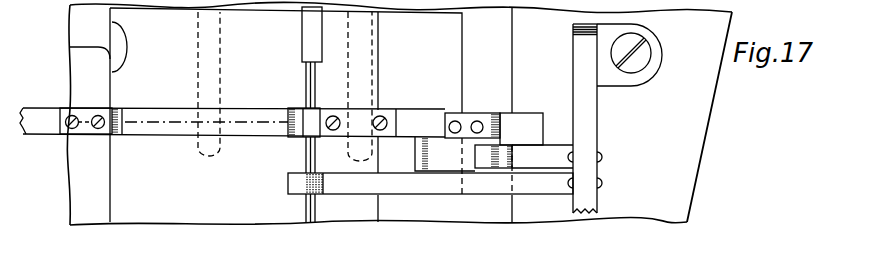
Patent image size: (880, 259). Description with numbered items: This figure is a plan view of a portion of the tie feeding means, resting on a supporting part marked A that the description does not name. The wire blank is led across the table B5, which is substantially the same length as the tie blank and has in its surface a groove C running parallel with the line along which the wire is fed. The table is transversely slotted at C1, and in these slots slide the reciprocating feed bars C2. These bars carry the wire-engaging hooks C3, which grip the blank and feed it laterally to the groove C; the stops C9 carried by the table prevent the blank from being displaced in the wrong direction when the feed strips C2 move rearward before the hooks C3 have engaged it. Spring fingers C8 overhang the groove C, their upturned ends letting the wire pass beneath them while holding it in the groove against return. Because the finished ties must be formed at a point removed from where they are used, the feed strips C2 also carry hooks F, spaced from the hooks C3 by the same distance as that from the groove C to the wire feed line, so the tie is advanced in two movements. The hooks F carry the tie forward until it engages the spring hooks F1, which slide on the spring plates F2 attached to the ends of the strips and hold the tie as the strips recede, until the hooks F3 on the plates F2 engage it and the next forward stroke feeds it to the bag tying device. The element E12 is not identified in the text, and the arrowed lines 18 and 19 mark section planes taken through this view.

The base or bed A is at (77, 210).
The table B5 is at (117, 194).
The groove C is at (305, 86).
The transverse slots C1 is at (172, 108).
The feed bars C2 is at (145, 116).
The wire-engaging hooks C3 is at (117, 135).
The spring fingers C8 is at (395, 192).
The stops C9 is at (122, 40).
The rod head block E12 is at (302, 38).
The hooks F is at (295, 129).
The spring hooks F1 is at (502, 160).
The spring plates F2 is at (527, 116).
The hooks on spring plates F3 is at (498, 112).
The section line 18 is at (60, 122).
The section line 19 is at (288, 181).